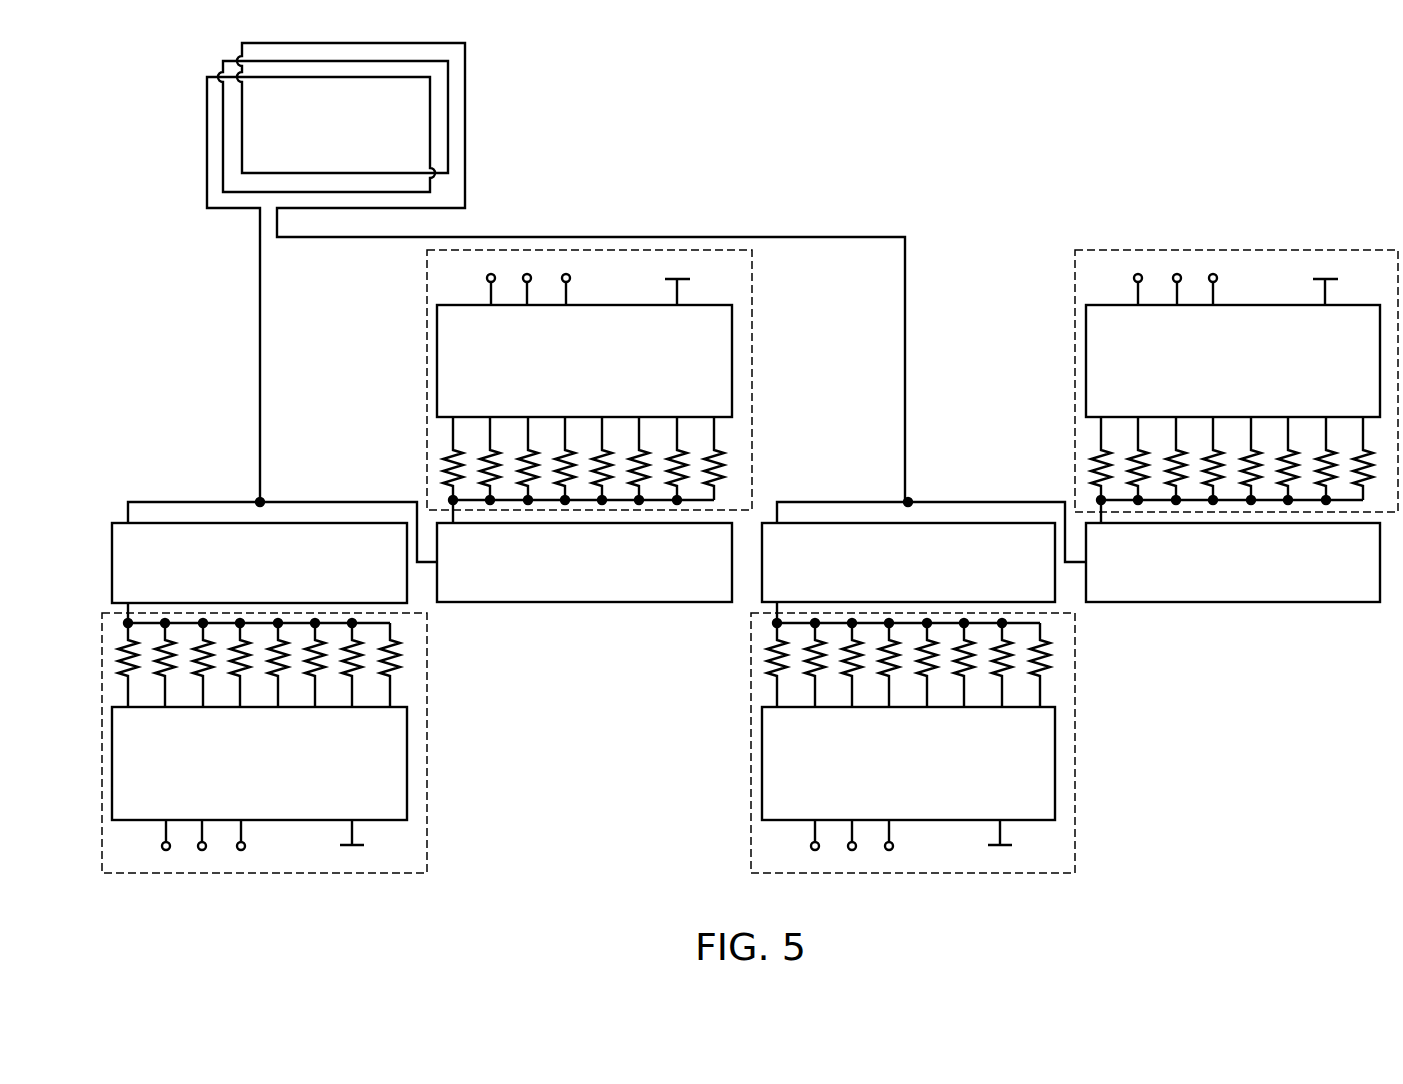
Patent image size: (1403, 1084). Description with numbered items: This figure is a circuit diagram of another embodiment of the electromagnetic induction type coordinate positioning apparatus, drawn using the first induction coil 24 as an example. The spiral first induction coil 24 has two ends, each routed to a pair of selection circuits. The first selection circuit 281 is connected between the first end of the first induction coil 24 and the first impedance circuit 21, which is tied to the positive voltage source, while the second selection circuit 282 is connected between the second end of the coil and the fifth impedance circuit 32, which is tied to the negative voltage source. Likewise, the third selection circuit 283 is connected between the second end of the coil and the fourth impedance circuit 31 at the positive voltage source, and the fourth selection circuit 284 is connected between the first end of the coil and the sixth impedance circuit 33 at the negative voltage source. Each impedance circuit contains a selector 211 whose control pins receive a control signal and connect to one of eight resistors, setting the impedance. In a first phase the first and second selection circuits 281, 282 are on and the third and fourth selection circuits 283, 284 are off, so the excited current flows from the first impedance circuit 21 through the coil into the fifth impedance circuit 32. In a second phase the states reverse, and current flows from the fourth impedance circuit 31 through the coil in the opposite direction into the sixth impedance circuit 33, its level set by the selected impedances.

The first induction coil 24 is at (207, 145).
The selector 211 is at (713, 305).
The first impedance circuit 21 is at (1075, 272).
The fourth impedance circuit 31 is at (752, 278).
The fifth impedance circuit 32 is at (427, 800).
The sixth impedance circuit 33 is at (751, 800).
The first selection circuit 281 is at (1232, 602).
The second selection circuit 282 is at (183, 523).
The third selection circuit 283 is at (583, 602).
The fourth selection circuit 284 is at (832, 523).